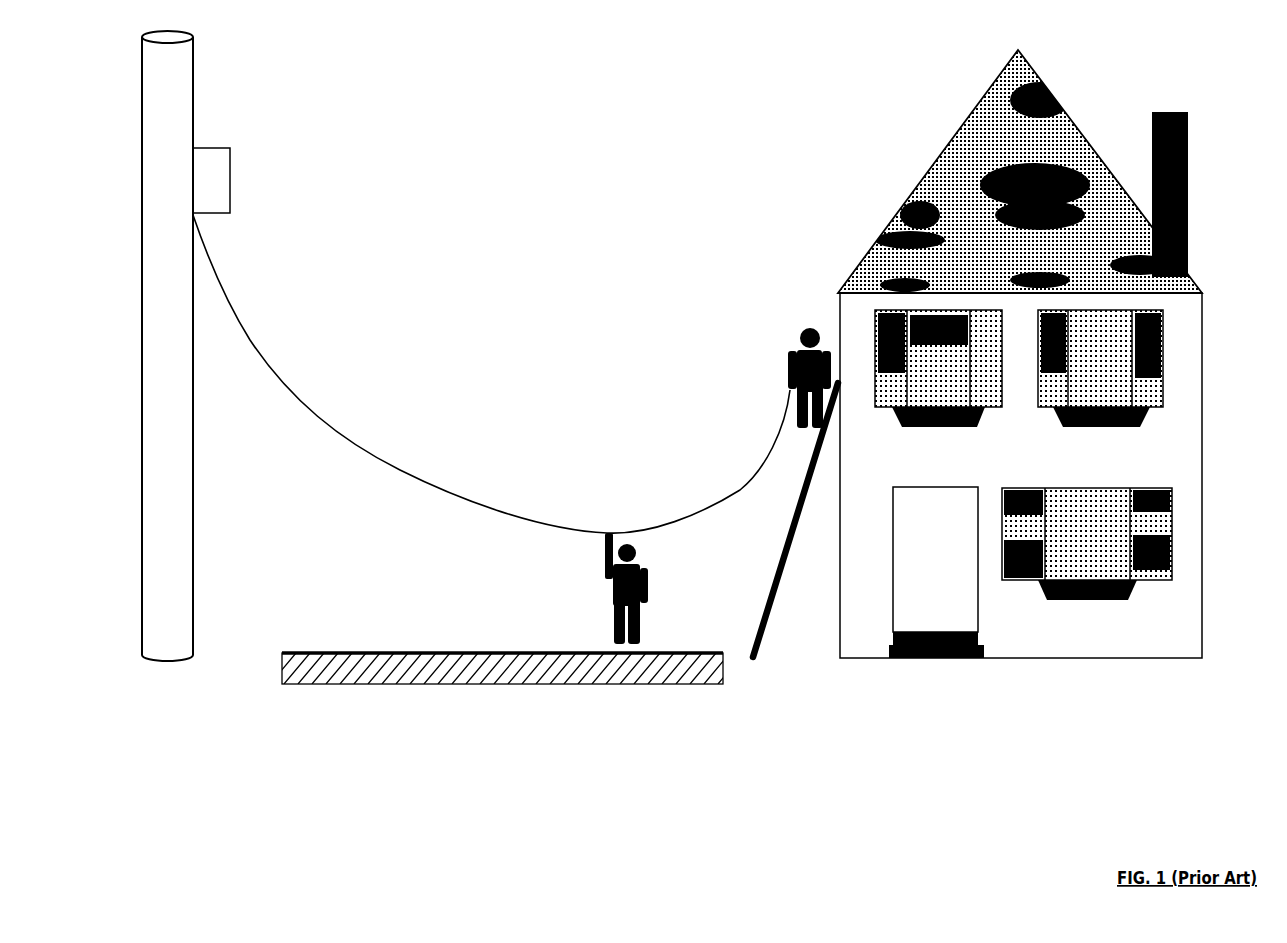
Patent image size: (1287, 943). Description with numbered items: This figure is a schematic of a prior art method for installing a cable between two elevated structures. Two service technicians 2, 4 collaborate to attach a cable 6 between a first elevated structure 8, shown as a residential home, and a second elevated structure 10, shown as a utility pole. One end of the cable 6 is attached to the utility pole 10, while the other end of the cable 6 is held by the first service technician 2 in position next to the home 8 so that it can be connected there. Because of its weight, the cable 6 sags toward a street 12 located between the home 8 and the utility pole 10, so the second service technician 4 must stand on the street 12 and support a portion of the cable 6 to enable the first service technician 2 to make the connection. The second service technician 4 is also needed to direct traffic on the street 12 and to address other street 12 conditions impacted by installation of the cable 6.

The first service technician 2 is at (777, 348).
The second service technician 4 is at (660, 602).
The cable 6 is at (413, 471).
The first elevated structure 8 is at (884, 236).
The second elevated structure 10 is at (195, 82).
The street 12 is at (333, 645).